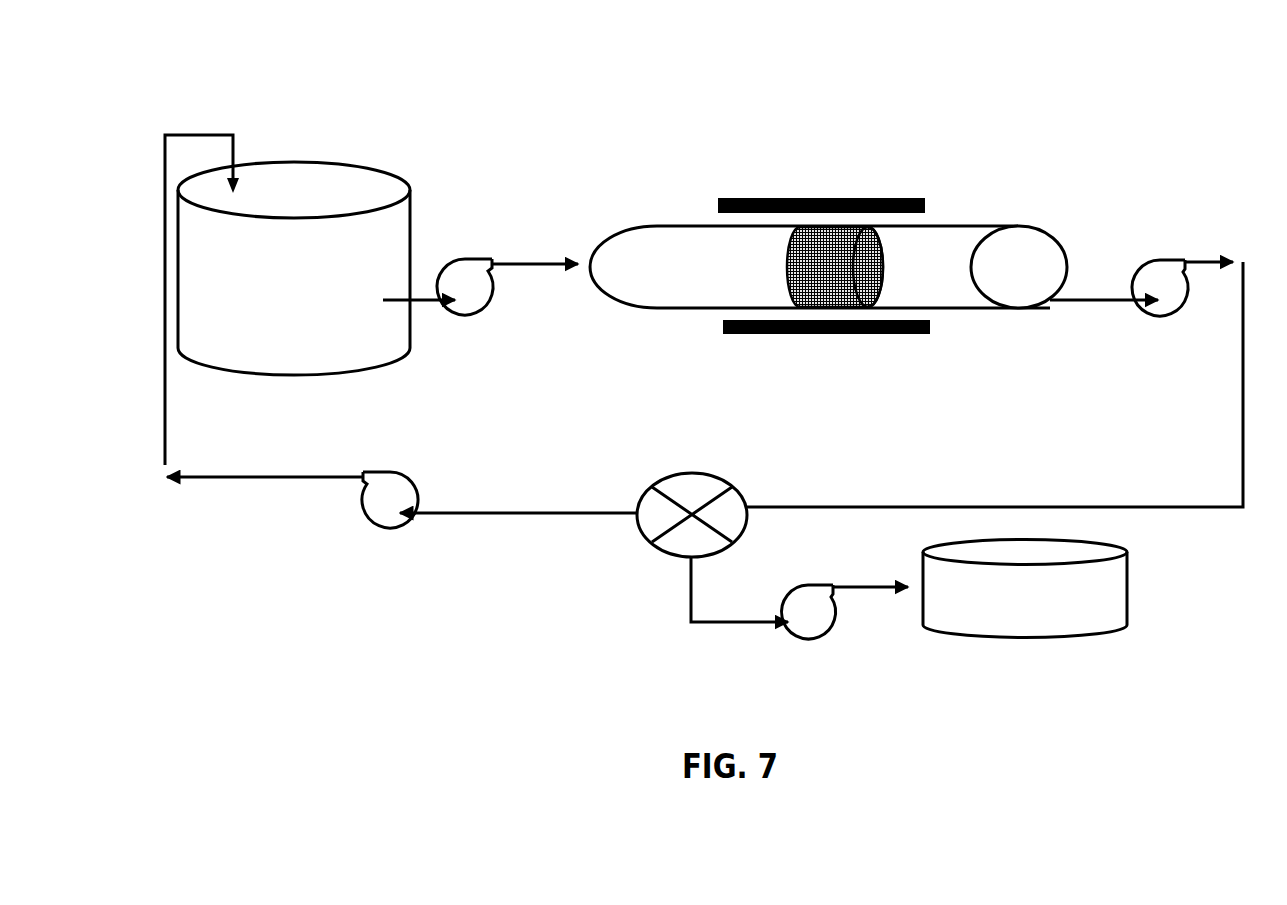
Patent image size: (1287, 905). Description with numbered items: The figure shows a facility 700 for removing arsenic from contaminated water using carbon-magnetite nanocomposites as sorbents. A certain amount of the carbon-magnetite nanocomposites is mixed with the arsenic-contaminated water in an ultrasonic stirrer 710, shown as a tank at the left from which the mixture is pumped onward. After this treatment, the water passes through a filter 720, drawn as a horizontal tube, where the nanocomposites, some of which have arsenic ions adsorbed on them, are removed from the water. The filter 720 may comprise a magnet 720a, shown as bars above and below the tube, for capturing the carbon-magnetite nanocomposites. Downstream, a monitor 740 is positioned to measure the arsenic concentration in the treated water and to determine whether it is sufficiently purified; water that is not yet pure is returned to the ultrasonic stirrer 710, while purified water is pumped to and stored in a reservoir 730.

The facility 700 is at (672, 145).
The ultrasonic stirrer 710 is at (343, 177).
The filter 720 is at (955, 317).
The magnet 720a is at (842, 197).
The reservoir 730 is at (1127, 602).
The monitor 740 is at (663, 552).